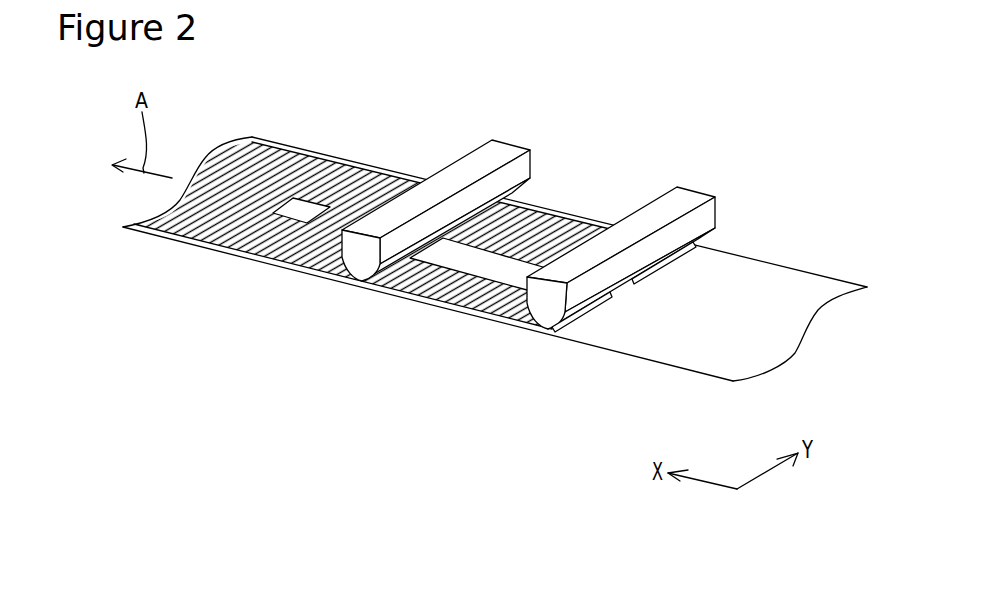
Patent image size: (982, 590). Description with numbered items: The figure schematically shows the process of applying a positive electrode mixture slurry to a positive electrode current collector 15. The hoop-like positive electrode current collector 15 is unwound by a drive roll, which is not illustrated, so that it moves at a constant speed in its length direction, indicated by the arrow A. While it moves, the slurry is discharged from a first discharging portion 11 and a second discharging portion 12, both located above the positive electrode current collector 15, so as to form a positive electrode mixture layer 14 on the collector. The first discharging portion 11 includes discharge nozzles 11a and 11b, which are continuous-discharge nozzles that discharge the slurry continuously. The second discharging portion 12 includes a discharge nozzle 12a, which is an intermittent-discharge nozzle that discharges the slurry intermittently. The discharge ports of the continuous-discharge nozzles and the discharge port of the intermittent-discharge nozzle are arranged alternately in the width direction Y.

The first discharging portion 11 is at (687, 200).
The discharge nozzle 11a is at (583, 317).
The discharge nozzle 11b is at (672, 273).
The second discharging portion 12 is at (500, 150).
The discharge nozzle 12a is at (498, 250).
The positive electrode mixture layer 14 is at (207, 243).
The positive electrode current collector 15 is at (802, 270).